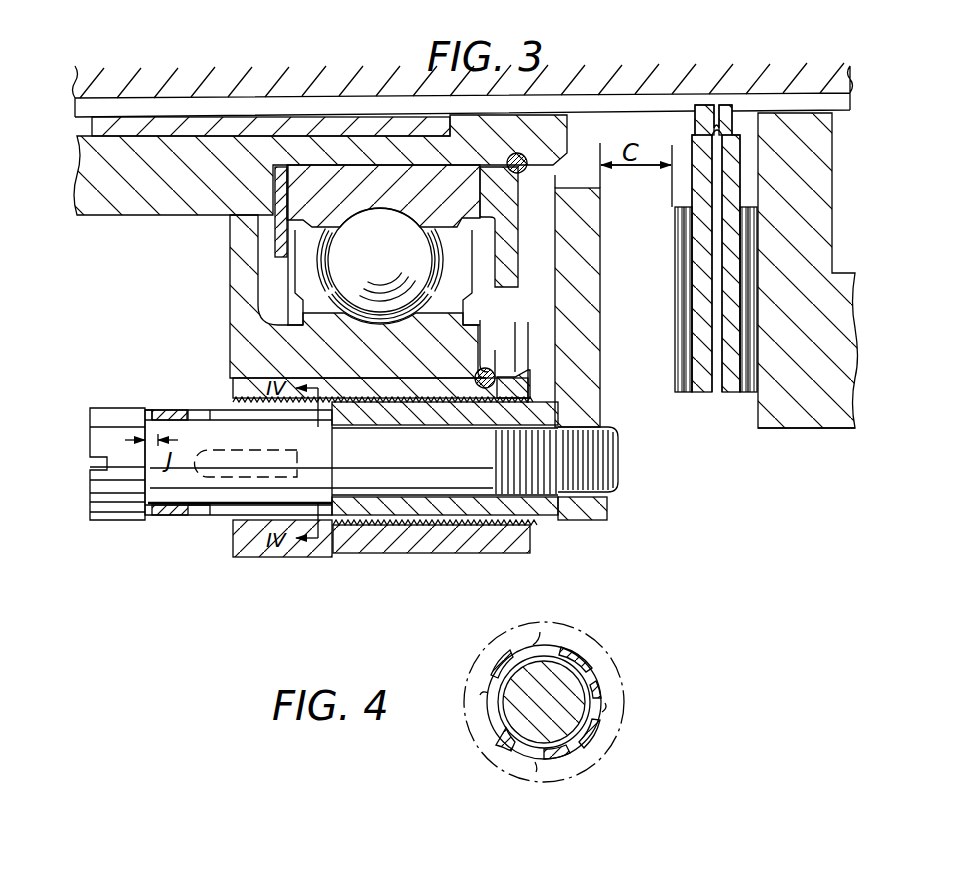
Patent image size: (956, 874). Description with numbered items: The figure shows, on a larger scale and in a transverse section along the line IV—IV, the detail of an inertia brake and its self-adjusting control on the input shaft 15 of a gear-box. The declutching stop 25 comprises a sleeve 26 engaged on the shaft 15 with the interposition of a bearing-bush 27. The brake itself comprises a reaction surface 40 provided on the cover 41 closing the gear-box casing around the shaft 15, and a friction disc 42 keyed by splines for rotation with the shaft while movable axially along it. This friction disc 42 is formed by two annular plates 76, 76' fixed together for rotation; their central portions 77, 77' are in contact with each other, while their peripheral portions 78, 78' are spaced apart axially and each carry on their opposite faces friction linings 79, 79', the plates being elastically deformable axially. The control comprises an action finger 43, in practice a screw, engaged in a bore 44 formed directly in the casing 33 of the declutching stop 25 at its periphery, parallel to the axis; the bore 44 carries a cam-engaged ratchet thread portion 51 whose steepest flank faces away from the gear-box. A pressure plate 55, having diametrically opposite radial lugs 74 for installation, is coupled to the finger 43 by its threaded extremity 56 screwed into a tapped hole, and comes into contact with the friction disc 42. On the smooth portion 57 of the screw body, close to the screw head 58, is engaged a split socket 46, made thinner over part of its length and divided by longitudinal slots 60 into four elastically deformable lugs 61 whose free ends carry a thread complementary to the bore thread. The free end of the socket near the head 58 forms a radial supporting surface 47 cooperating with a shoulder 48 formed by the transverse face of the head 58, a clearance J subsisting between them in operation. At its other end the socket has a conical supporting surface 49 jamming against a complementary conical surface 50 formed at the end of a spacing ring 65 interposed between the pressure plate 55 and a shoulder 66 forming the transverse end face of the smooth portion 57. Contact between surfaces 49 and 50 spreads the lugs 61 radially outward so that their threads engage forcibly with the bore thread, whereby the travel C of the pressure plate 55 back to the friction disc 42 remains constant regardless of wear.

In FIG. 3, the input shaft 15 is at (149, 93).
In FIG. 3, the declutching stop 25 is at (228, 570).
In FIG. 3, the sleeve 26 is at (152, 204).
In FIG. 3, the bearing-bush 27 is at (206, 128).
In FIG. 3, the casing 33 is at (320, 556).
In FIG. 3, the reaction surface 40 is at (753, 350).
In FIG. 3, the cover 41 is at (822, 432).
In FIG. 3, the friction disc 42 is at (668, 302).
In FIG. 3, the action finger 43 is at (222, 508).
In FIG. 4, the action finger 43 is at (514, 735).
In FIG. 3, the bore 44 is at (427, 410).
In FIG. 3, the split socket 46 is at (158, 406).
In FIG. 4, the split socket 46 is at (592, 746).
In FIG. 3, the radial supporting surface 47 is at (150, 403).
In FIG. 3, the shoulder 48 is at (148, 516).
In FIG. 3, the conical supporting surface 49 is at (340, 413).
In FIG. 3, the complementary conical surface 50 is at (335, 522).
In FIG. 3, the thread portion 51 is at (242, 421).
In FIG. 3, the pressure plate 55 is at (585, 522).
In FIG. 3, the threaded extremity 56 is at (545, 470).
In FIG. 3, the smooth portion 57 is at (177, 518).
In FIG. 4, the smooth portion 57 is at (587, 648).
In FIG. 3, the screw head 58 is at (103, 420).
In FIG. 3, the longitudinal slots 60 is at (247, 520).
In FIG. 4, the longitudinal slots 60 is at (533, 637).
In FIG. 3, the lugs 61 is at (195, 408).
In FIG. 4, the lugs 61 is at (487, 670).
In FIG. 3, the spacing ring 65 is at (413, 524).
In FIG. 3, the shoulder 66 is at (298, 452).
In FIG. 3, the radial lugs 74 is at (602, 511).
In FIG. 3, the annular plate 76 is at (704, 218).
In FIG. 3, the annular plate 76' is at (760, 218).
In FIG. 3, the central portion 77 is at (667, 189).
In FIG. 3, the central portion 77' is at (772, 189).
In FIG. 3, the peripheral portion 78 is at (691, 331).
In FIG. 3, the peripheral portion 78' is at (734, 320).
In FIG. 3, the friction lining 79 is at (666, 320).
In FIG. 3, the friction lining 79' is at (761, 331).